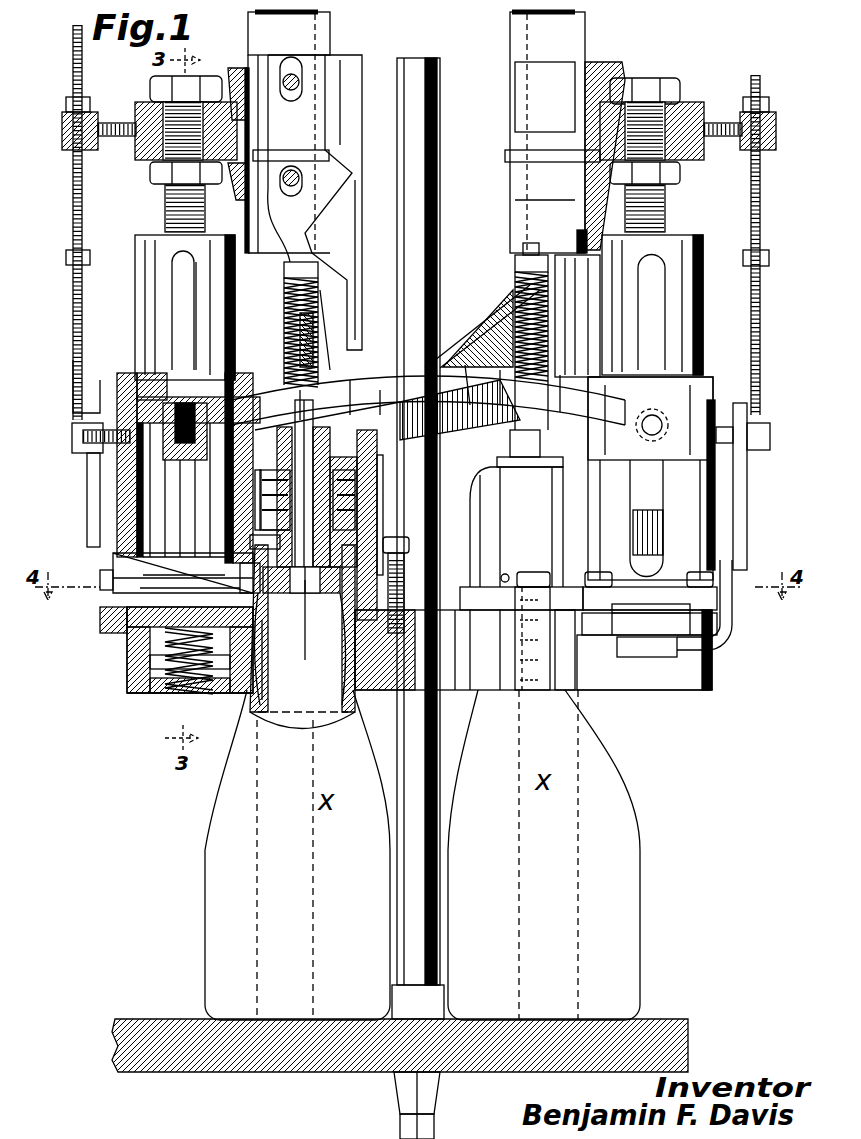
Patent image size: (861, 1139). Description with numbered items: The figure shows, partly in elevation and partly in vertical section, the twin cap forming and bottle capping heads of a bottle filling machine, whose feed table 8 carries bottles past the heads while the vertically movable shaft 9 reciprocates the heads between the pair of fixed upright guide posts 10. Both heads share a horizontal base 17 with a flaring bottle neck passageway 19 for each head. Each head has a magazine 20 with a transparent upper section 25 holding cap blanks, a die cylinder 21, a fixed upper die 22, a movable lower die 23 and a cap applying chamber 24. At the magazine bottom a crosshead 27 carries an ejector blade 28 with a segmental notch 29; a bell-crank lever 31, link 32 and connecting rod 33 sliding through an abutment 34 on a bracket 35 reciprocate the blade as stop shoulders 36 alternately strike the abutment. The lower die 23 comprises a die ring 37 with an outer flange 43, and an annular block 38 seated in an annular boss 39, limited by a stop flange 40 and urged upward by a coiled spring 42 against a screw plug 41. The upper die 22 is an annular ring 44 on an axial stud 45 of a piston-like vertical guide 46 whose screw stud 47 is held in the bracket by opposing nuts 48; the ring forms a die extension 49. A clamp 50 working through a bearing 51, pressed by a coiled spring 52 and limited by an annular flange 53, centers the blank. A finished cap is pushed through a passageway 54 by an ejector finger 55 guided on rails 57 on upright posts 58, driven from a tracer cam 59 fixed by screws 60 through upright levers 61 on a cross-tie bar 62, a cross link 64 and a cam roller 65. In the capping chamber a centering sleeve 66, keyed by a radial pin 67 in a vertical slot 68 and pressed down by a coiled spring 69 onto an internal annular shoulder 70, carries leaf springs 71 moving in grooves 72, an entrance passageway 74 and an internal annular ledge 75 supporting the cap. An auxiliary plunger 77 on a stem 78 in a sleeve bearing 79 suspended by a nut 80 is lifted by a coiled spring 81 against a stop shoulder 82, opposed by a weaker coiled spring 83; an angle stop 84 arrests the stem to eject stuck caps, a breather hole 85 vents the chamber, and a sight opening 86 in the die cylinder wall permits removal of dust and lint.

The feed table 8 is at (140, 1068).
The vertically movable shaft 9 is at (440, 228).
The fixed upright guide posts 10 is at (318, 13).
The base 17 is at (705, 668).
The bottle neck passageway 19 is at (250, 705).
The magazine 20 is at (718, 508).
The die cylinder 21 is at (138, 505).
The upper die 22 is at (130, 395).
The lower die 23 is at (188, 675).
The cap applying chamber 24 is at (360, 474).
The transparent upper section 25 is at (708, 400).
The crosshead 27 is at (645, 655).
The ejector blade 28 is at (680, 606).
The segmental notch 29 is at (640, 540).
The bell-crank lever 31 is at (745, 484).
The link 32 is at (740, 628).
The connecting rod 33 is at (73, 322).
The abutment 34 is at (62, 130).
The bracket 35 is at (248, 66).
The stop shoulders 36 is at (66, 100).
The die ring 37 is at (150, 620).
The annular block 38 is at (140, 640).
The annular boss 39 is at (180, 670).
The stop flange 40 is at (160, 650).
The screw plug 41 is at (190, 693).
The coiled spring 42 is at (200, 695).
The outer flange 43 is at (130, 612).
The annular ring 44 is at (200, 497).
The axial stud 45 is at (160, 505).
The vertical guide 46 is at (135, 327).
The screw stud 47 is at (165, 205).
The opposing nuts 48 is at (150, 88).
The die extension 49 is at (118, 470).
The clamp 50 is at (186, 475).
The bearing 51 is at (205, 462).
The coiled spring 52 is at (196, 378).
The annular flange 53 is at (168, 395).
The passageway 54 is at (250, 588).
The ejector finger 55 is at (165, 556).
The guide rails 57 is at (115, 560).
The upright posts 58 is at (113, 580).
The tracer cam 59 is at (344, 152).
The screws 60 is at (292, 98).
The upright levers 61 is at (325, 360).
The cross-tie bar 62 is at (435, 364).
The cross link 64 is at (476, 318).
The cam roller 65 is at (340, 306).
The centering sleeve 66 is at (385, 490).
The radial pin 67 is at (380, 510).
The vertical slot 68 is at (370, 560).
The coiled spring 69 is at (255, 510).
The internal annular shoulder 70 is at (268, 640).
The leaf springs 71 is at (325, 654).
The grooves 72 is at (282, 628).
The entrance passageway 74 is at (190, 560).
The internal annular ledge 75 is at (350, 558).
The auxiliary plunger 77 is at (312, 626).
The stem 78 is at (335, 412).
The sleeve bearing 79 is at (255, 528).
The nut 80 is at (330, 440).
The coiled spring 81 is at (318, 298).
The stop shoulder 82 is at (318, 270).
The coiled spring 83 is at (268, 540).
The angle stop 84 is at (270, 155).
The breather hole 85 is at (355, 450).
The sight opening 86 is at (130, 585).